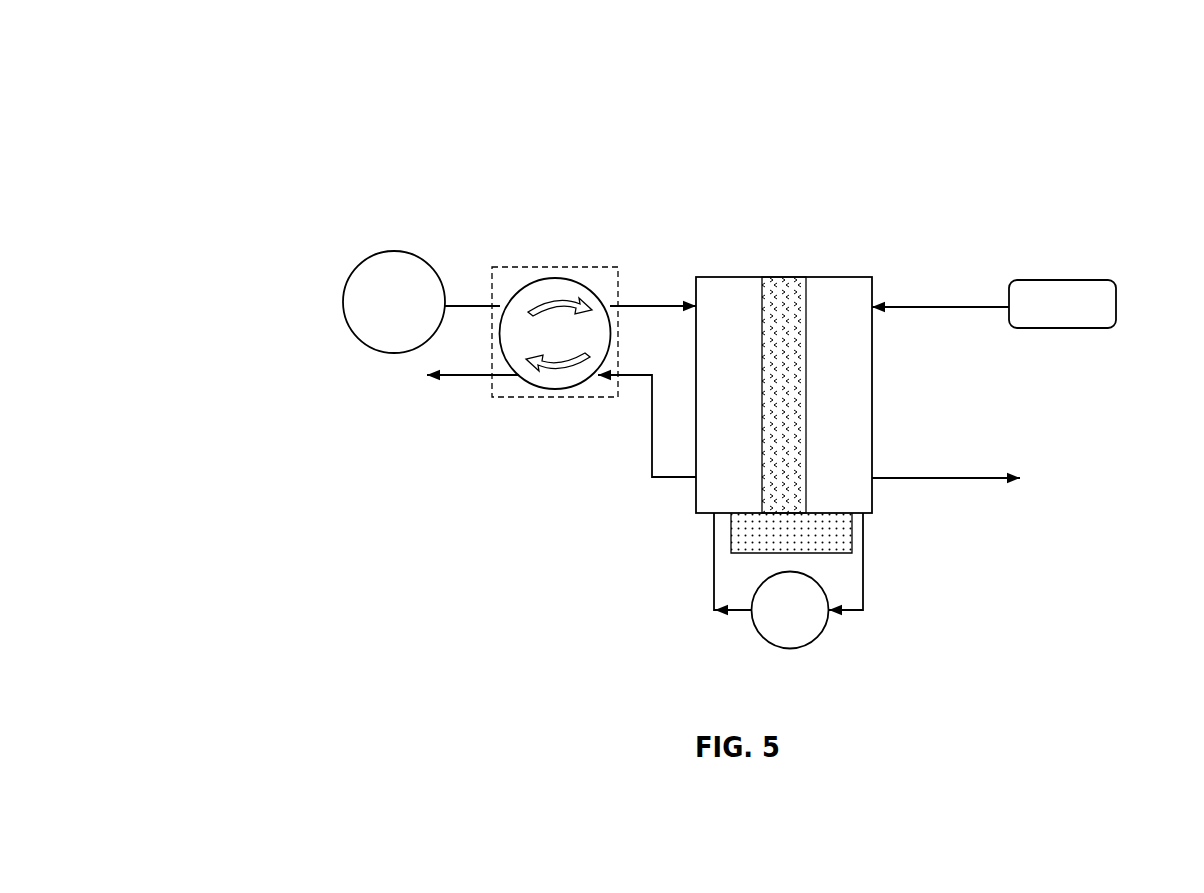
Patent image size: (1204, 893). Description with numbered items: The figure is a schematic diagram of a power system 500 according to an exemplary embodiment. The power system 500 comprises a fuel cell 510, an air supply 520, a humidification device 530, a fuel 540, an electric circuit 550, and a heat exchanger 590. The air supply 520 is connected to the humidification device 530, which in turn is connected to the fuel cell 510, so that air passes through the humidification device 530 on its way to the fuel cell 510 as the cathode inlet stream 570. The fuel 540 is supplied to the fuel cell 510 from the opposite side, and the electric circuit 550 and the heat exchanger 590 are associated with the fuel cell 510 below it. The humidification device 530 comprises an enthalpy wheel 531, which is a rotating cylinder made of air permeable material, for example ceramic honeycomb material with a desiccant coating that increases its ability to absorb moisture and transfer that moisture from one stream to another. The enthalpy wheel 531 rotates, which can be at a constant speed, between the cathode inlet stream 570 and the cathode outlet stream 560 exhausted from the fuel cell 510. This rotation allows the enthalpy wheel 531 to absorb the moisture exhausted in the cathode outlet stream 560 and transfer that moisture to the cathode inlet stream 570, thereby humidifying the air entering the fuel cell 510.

The power system 500 is at (360, 108).
The fuel cell 510 is at (772, 256).
The air supply 520 is at (407, 250).
The humidification device 530 is at (560, 321).
The enthalpy wheel 531 is at (547, 394).
The fuel 540 is at (1057, 273).
The electric circuit 550 is at (850, 636).
The cathode outlet stream 560 is at (463, 380).
The cathode inlet stream 570 is at (650, 303).
The heat exchanger 590 is at (854, 540).